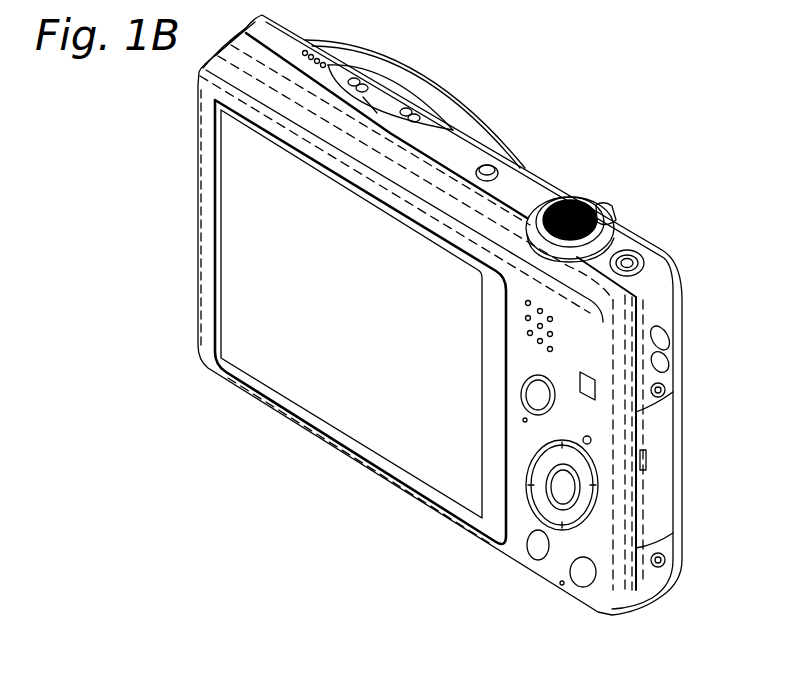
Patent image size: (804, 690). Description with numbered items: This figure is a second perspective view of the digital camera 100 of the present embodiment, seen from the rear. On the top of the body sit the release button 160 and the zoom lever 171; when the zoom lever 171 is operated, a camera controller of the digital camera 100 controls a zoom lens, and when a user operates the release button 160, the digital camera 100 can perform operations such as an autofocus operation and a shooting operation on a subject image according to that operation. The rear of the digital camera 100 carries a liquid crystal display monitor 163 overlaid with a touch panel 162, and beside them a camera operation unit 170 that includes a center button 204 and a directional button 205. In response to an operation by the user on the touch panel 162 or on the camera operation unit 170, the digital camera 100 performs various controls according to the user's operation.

The digital camera 100 is at (436, 82).
The release button 160 is at (558, 203).
The zoom lever 171 is at (603, 230).
The touch panel 162 is at (362, 383).
The liquid crystal display monitor 163 is at (351, 314).
The camera operation unit 170 is at (476, 540).
The center button 204 is at (558, 490).
The directional button 205 is at (563, 520).